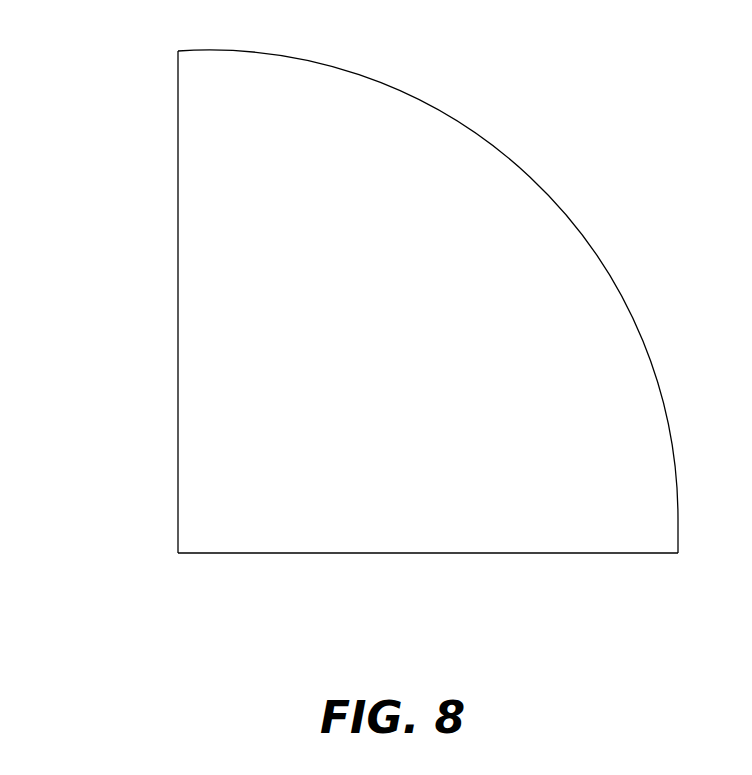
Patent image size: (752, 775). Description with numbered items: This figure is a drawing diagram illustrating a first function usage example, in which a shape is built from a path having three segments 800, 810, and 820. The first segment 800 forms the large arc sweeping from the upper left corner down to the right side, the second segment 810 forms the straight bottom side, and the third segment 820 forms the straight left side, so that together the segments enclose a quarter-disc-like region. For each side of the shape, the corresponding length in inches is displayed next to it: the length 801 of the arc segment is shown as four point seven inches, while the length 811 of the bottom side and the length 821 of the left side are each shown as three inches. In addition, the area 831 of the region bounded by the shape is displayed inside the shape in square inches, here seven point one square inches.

The segment 800 is at (390, 328).
The length 801 is at (585, 140).
The segment 810 is at (607, 555).
The length 811 is at (437, 602).
The segment 820 is at (178, 440).
The length 821 is at (123, 320).
The area 831 is at (360, 350).